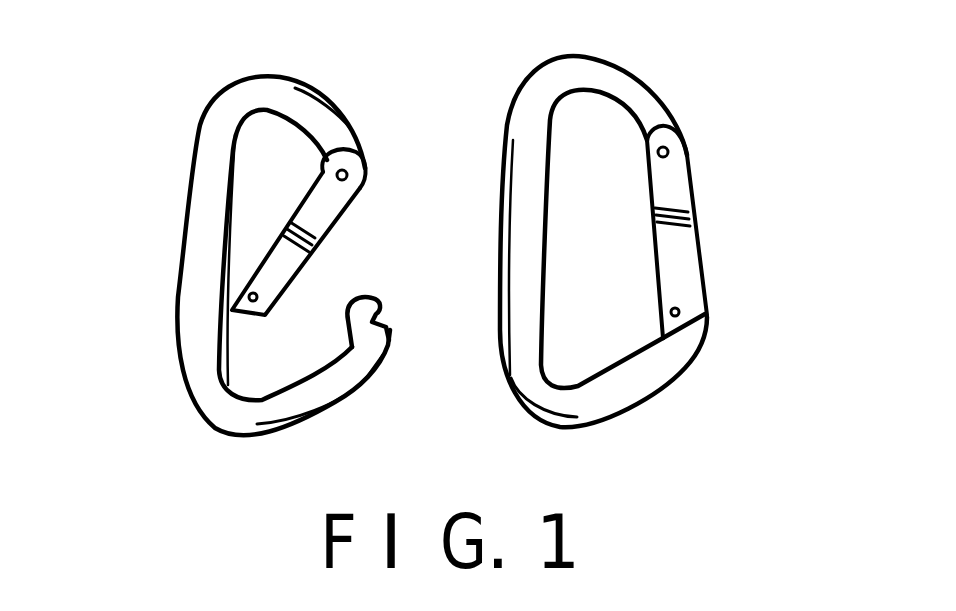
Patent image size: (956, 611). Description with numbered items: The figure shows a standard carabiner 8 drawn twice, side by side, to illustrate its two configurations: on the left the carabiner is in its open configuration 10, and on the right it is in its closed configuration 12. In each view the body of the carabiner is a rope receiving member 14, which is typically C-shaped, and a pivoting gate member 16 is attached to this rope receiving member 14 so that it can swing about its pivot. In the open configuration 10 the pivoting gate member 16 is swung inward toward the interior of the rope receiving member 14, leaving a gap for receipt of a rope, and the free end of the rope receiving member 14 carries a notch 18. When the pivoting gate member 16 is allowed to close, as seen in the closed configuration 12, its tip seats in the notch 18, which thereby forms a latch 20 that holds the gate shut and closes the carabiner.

The standard carabiner 8 is at (183, 87).
The open configuration 10 is at (347, 52).
The closed configuration 12 is at (670, 73).
The rope receiving member 14 is at (205, 233).
The pivoting gate member 16 is at (313, 230).
The notch 18 is at (377, 317).
The latch 20 is at (713, 315).